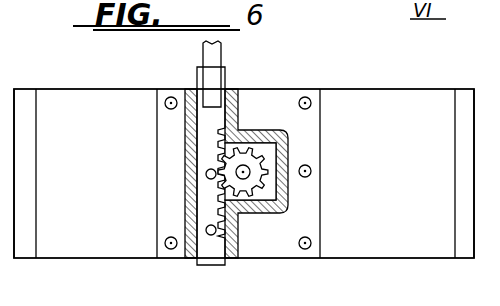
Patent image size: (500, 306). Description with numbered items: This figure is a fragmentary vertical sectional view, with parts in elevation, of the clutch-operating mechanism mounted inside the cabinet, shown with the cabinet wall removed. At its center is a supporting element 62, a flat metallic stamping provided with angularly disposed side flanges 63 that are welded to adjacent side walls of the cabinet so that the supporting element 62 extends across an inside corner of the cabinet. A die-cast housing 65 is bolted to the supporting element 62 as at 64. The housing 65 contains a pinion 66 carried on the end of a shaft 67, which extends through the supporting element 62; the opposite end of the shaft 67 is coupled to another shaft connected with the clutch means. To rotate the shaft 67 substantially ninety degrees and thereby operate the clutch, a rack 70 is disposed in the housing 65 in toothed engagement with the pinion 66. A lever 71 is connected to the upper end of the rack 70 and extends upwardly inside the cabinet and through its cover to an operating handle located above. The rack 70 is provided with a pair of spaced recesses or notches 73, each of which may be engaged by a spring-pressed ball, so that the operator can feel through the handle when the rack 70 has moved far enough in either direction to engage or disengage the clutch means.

The supporting element 62 is at (52, 173).
The side flanges 63 is at (464, 110).
The bolting point 64 is at (311, 172).
The die-cast housing 65 is at (237, 127).
The pinion 66 is at (258, 184).
The shaft 67 is at (243, 172).
The rack 70 is at (204, 128).
The lever 71 is at (211, 53).
The notches 73 is at (207, 176).